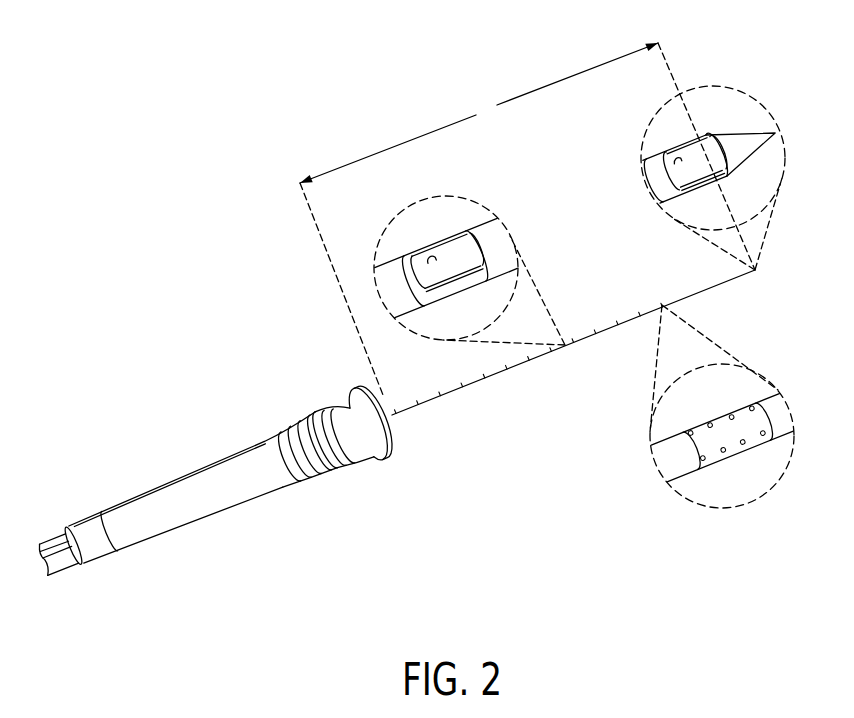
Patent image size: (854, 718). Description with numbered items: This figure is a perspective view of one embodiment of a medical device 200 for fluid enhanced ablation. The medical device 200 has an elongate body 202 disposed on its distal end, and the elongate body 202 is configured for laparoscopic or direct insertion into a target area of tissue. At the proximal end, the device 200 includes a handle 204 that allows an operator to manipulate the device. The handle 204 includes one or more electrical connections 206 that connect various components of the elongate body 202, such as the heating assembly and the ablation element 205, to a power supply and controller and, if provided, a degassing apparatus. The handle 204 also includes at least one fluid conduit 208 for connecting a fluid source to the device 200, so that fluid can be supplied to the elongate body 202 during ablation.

The medical device 200 is at (236, 77).
The elongate body 202 is at (482, 382).
The handle 204 is at (267, 482).
The ablation element 205 is at (740, 428).
The electrical connections 206 is at (57, 562).
The fluid conduit 208 is at (52, 545).